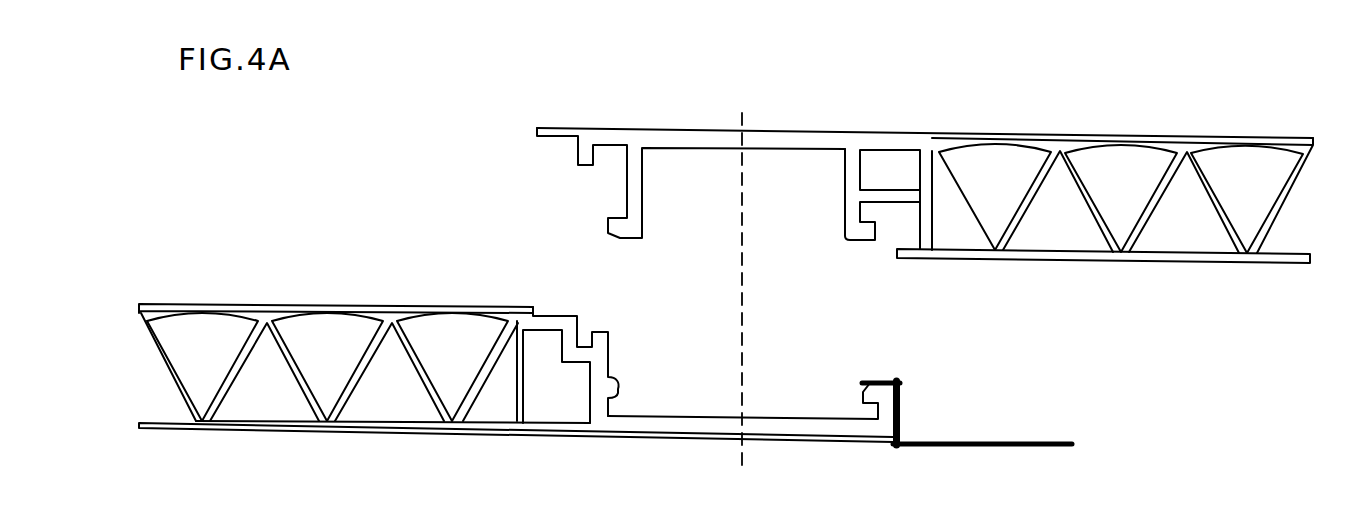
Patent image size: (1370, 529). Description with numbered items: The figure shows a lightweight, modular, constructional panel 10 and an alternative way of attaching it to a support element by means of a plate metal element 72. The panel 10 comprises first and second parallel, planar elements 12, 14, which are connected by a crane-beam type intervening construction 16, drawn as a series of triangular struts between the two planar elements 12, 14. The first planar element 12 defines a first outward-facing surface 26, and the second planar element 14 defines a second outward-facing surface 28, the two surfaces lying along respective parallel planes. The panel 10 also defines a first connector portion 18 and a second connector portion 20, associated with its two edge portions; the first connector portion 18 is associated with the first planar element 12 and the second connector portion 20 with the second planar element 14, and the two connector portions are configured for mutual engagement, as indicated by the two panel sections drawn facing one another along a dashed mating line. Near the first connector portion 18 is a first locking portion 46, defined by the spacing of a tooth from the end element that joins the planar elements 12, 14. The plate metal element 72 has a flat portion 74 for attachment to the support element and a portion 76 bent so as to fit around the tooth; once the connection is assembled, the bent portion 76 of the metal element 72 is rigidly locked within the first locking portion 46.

The lightweight, modular, constructional panel 10 is at (1130, 68).
The first planar element 12 is at (1146, 136).
The second planar element 14 is at (1186, 264).
The crane-beam type intervening construction 16 is at (1243, 175).
The first connector portion 18 is at (788, 126).
The second connector portion 20 is at (625, 450).
The first outward-facing surface 26 is at (998, 118).
The second outward-facing surface 28 is at (1008, 272).
The first locking portion 46 is at (888, 238).
The plate metal element 72 is at (985, 472).
The flat portion 74 is at (1000, 442).
The bent portion 76 is at (912, 398).